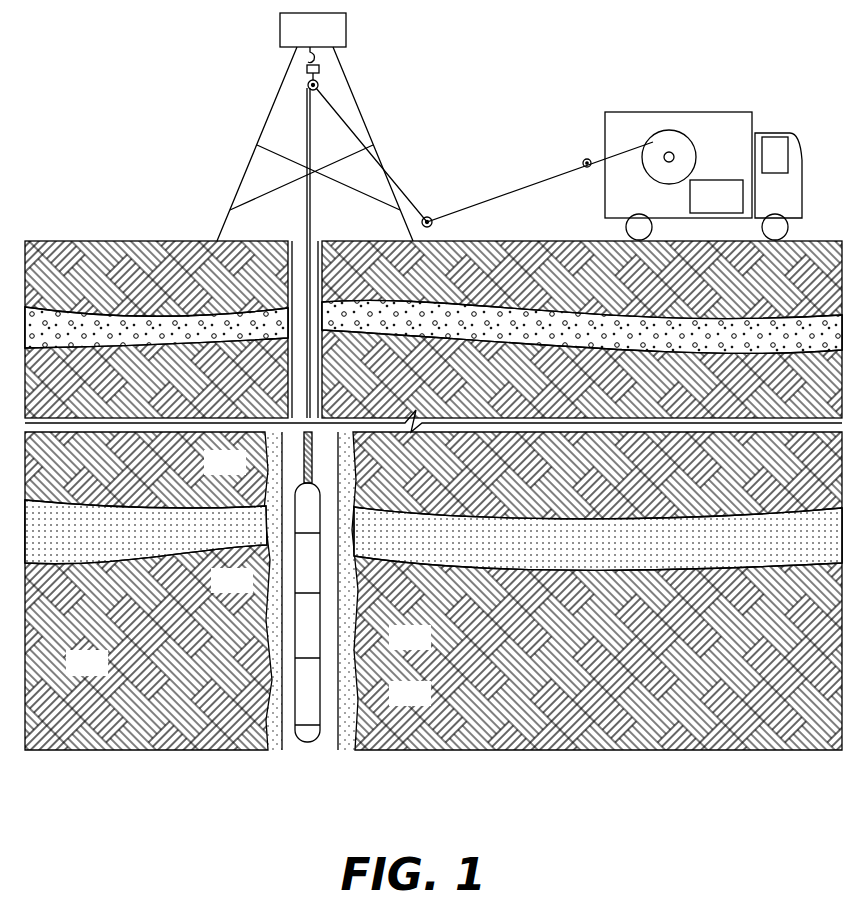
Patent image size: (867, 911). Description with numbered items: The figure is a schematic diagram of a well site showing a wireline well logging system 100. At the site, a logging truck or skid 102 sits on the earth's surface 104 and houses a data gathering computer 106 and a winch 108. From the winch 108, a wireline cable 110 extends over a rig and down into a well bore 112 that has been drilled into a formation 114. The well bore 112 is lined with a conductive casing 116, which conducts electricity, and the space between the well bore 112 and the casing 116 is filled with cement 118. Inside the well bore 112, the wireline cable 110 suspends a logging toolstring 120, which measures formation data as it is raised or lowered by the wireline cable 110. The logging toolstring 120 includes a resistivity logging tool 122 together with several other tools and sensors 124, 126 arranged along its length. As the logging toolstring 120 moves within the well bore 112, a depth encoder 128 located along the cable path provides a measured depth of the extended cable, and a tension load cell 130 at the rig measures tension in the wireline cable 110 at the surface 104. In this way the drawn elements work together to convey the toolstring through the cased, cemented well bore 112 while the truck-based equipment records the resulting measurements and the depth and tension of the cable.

The wireline well logging system 100 is at (666, 57).
The logging truck or skid 102 is at (703, 112).
The earth's surface 104 is at (100, 240).
The data gathering computer 106 is at (700, 208).
The winch 108 is at (652, 140).
The wireline cable 110 is at (530, 187).
The well bore 112 is at (303, 241).
The formation 114 is at (69, 674).
The conductive casing 116 is at (319, 241).
The cement 118 is at (347, 737).
The logging toolstring 120 is at (302, 483).
The resistivity logging tool 122 is at (320, 630).
The tools and sensors 124 is at (295, 565).
The tools and sensors 126 is at (320, 687).
The depth encoder 128 is at (586, 158).
The tension load cell 130 is at (319, 70).